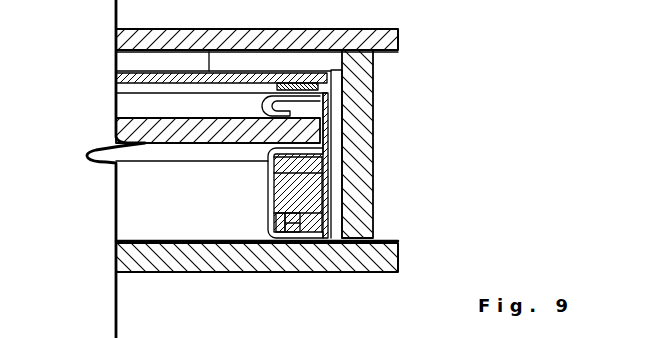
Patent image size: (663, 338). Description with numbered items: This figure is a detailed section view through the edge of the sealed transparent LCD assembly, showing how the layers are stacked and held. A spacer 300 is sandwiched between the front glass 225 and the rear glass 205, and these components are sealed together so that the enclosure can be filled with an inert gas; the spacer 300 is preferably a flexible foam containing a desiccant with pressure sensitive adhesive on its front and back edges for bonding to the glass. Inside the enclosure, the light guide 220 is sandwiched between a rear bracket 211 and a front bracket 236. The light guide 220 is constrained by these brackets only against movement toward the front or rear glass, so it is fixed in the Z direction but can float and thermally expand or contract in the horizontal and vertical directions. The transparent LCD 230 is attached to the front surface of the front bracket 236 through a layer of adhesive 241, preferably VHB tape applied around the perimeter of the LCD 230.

The rear glass 205 is at (155, 247).
The rear bracket 211 is at (270, 220).
The light guide 220 is at (152, 123).
The front glass 225 is at (360, 33).
The transparent LCD 230 is at (150, 78).
The front bracket 236 is at (328, 202).
The adhesive 241 is at (335, 72).
The spacer 300 is at (368, 108).